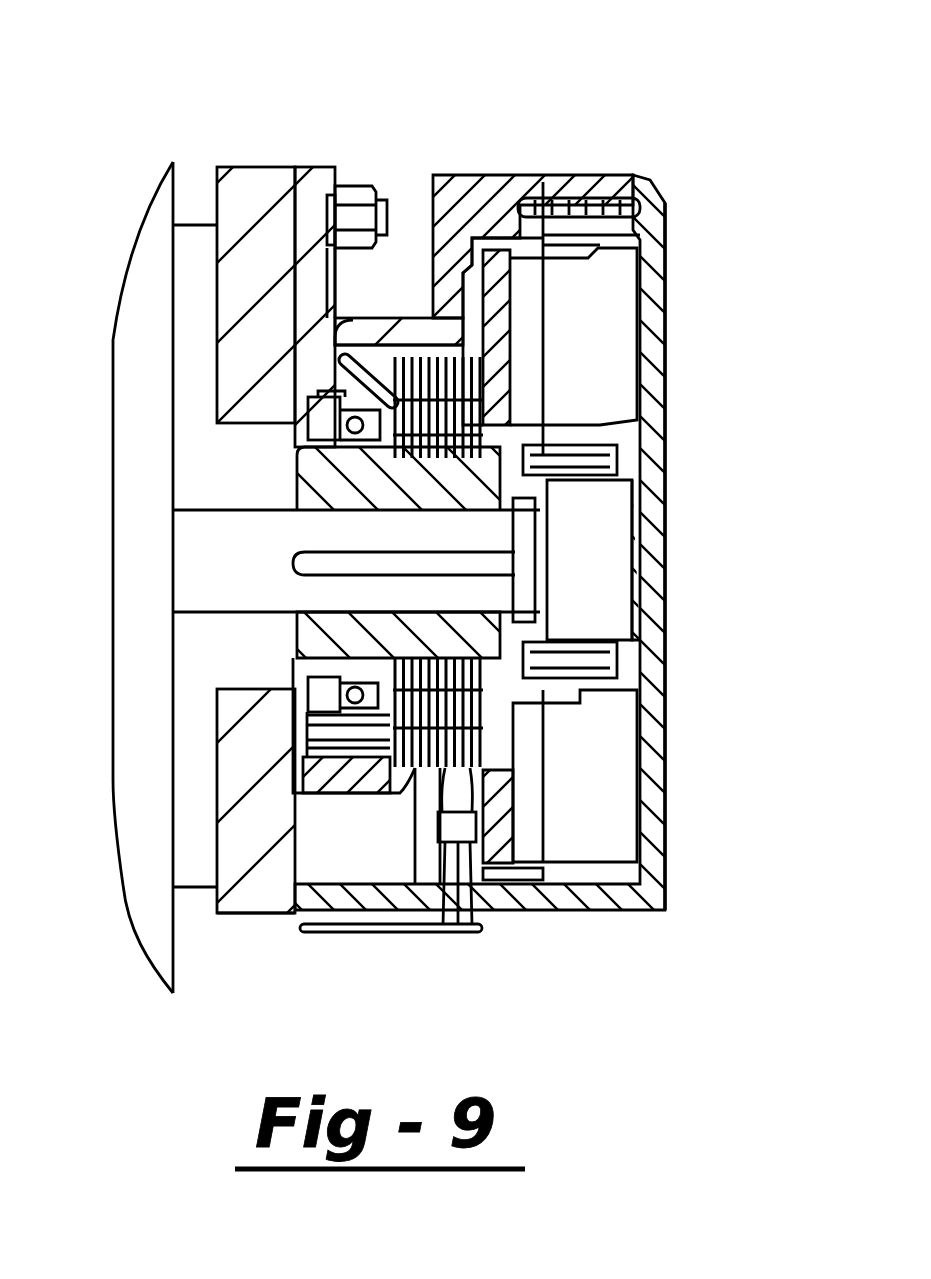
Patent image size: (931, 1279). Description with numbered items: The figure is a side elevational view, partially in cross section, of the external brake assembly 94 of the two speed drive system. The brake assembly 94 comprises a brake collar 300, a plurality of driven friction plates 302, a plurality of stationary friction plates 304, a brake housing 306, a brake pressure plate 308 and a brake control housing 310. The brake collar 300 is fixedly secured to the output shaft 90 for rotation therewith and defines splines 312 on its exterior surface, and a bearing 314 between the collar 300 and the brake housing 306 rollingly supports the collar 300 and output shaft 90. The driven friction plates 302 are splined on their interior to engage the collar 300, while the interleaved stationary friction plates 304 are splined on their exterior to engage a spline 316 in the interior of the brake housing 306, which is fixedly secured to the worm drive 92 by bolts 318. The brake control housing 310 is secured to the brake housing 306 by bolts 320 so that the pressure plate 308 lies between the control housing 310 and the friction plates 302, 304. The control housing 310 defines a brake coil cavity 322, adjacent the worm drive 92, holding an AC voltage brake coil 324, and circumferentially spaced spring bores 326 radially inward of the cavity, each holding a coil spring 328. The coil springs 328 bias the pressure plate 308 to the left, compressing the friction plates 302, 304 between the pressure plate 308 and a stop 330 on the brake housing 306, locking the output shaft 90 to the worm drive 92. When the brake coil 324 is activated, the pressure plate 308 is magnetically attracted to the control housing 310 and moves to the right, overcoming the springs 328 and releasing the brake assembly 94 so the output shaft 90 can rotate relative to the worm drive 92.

The output shaft 90 is at (243, 568).
The worm drive 92 is at (135, 787).
The brake assembly 94 is at (552, 90).
The brake collar 300 is at (310, 462).
The driven friction plates 302 is at (305, 418).
The stationary friction plates 304 is at (360, 405).
The brake housing 306 is at (540, 145).
The brake pressure plate 308 is at (500, 322).
The brake control housing 310 is at (633, 885).
The splines 312 is at (357, 513).
The bearing 314 is at (330, 690).
The spline 316 is at (410, 792).
The bolts 318 is at (360, 184).
The bolts 320 is at (647, 203).
The brake coil cavity 322 is at (610, 262).
The AC voltage brake coil 324 is at (602, 792).
The spring bores 326 is at (608, 417).
The coil springs 328 is at (590, 637).
The stop 330 is at (400, 395).